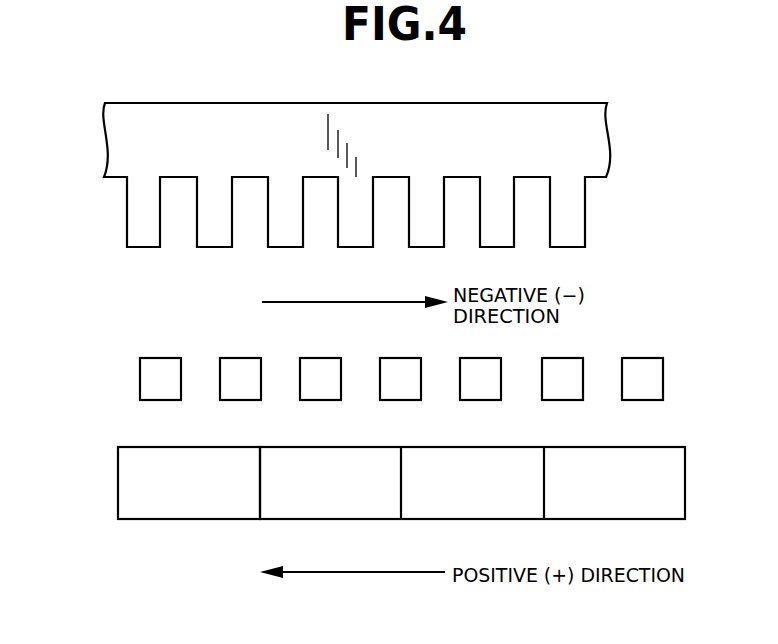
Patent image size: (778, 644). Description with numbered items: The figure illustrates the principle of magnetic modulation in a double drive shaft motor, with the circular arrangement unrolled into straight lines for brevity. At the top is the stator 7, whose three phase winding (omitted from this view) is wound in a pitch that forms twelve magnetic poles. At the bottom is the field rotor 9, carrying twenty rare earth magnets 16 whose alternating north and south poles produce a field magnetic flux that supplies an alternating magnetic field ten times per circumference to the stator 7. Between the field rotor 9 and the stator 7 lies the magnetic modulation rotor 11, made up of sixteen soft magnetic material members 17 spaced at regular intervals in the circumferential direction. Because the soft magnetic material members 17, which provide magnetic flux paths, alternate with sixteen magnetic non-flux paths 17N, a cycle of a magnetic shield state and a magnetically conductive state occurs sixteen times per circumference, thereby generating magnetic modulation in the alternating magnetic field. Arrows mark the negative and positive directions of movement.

The stator 7 is at (67, 96).
The magnetic modulation rotor 11 is at (350, 347).
The soft magnetic material members 17 is at (162, 367).
The magnetic non-flux paths 17N is at (440, 380).
The field rotor 9 is at (358, 520).
The rare earth magnets 16 is at (152, 507).